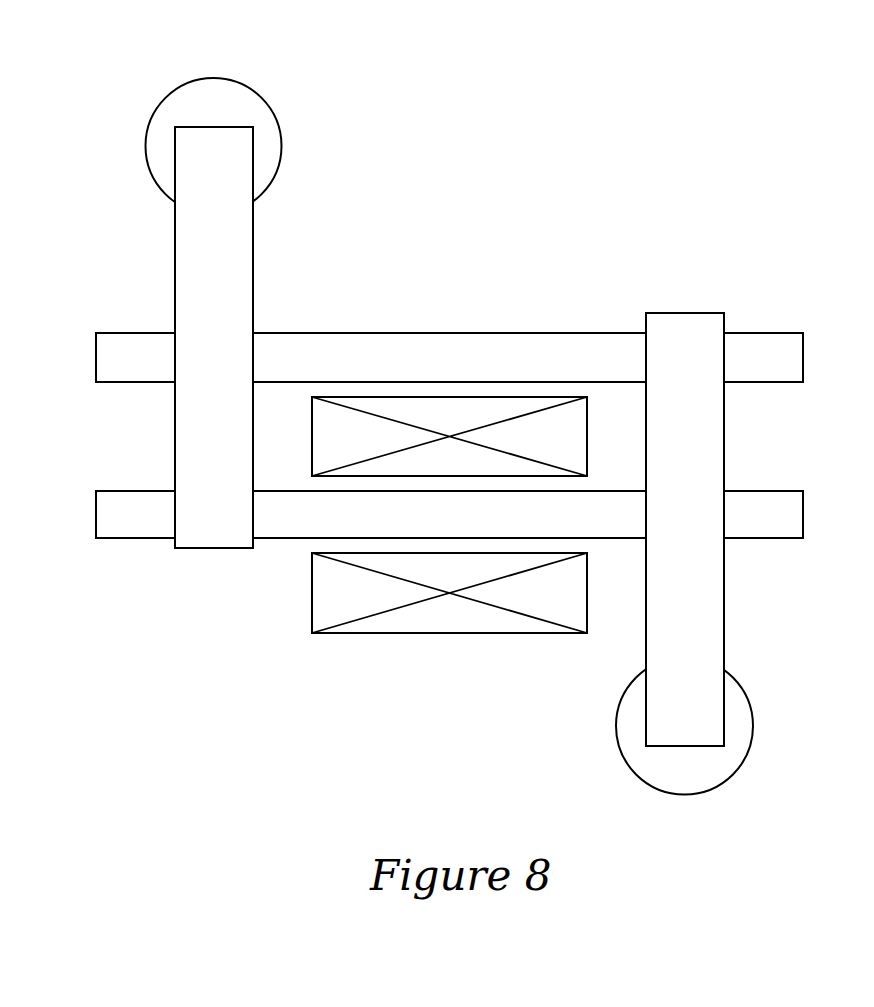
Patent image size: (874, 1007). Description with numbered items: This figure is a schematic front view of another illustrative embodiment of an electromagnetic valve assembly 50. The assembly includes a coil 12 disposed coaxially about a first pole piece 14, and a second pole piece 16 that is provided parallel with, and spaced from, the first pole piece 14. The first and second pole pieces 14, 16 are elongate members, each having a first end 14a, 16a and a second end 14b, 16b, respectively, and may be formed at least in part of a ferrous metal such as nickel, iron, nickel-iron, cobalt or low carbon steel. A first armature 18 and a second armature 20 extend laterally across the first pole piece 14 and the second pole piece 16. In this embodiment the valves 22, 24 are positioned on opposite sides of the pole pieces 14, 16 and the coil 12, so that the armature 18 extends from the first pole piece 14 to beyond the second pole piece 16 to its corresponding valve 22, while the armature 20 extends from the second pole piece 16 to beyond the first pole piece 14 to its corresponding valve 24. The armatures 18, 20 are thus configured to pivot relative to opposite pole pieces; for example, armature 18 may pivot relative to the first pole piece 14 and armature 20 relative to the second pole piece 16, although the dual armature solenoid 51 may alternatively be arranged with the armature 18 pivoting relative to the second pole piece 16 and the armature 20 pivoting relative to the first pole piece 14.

The coil 12 is at (578, 437).
The first pole piece 14 is at (310, 530).
The first end of first pole piece 14a is at (265, 523).
The second end of first pole piece 14b is at (768, 525).
The second pole piece 16 is at (447, 340).
The first end of second pole piece 16a is at (268, 340).
The second end of second pole piece 16b is at (628, 340).
The first armature 18 is at (185, 297).
The second armature 20 is at (713, 402).
The valve 22 is at (212, 83).
The valve 24 is at (702, 773).
The electromagnetic valve assembly 50 is at (575, 98).
The dual armature solenoid 51 is at (789, 242).